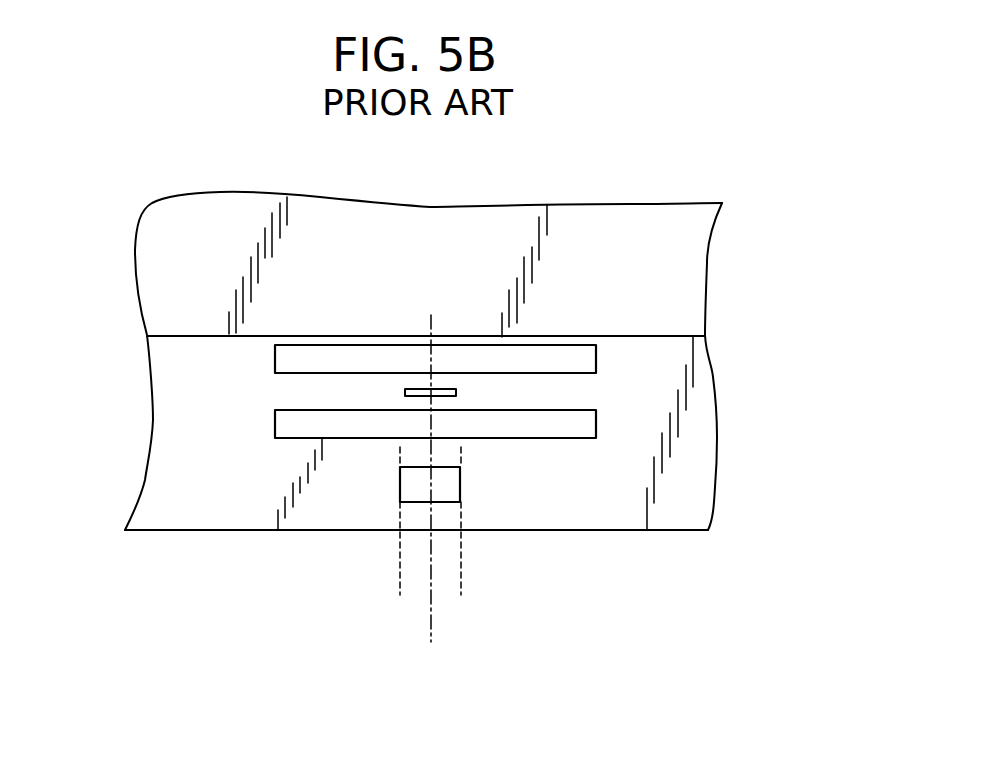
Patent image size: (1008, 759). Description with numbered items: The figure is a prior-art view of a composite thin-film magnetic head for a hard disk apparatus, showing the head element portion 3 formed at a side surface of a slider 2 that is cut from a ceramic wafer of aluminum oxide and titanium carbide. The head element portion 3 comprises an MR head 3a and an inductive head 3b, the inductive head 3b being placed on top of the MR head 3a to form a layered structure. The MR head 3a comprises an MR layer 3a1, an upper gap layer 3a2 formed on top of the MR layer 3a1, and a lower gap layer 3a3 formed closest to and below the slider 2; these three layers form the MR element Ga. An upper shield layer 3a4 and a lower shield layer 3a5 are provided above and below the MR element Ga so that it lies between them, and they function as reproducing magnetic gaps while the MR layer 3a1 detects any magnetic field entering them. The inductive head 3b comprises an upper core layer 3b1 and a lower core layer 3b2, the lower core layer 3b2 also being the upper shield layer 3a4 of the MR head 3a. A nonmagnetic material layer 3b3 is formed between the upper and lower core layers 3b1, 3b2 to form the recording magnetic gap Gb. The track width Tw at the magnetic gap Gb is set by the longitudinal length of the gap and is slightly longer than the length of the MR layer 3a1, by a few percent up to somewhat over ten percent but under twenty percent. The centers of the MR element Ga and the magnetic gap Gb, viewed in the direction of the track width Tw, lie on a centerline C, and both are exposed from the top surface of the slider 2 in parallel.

The slider 2 is at (683, 257).
The head element portion 3 is at (607, 515).
The MR head 3a is at (258, 347).
The inductive head 3b is at (243, 410).
The MR layer 3a1 is at (456, 403).
The upper gap layer 3a2 is at (460, 405).
The lower gap layer 3a3 is at (458, 383).
The upper shield layer 3a4 is at (565, 433).
The lower shield layer 3a5 is at (565, 357).
The upper core layer 3b1 is at (442, 450).
The lower core layer 3b2 is at (563, 462).
The nonmagnetic material layer 3b3 is at (445, 480).
The MR element Ga is at (818, 347).
The recording magnetic gap Gb is at (405, 449).
The track width Tw is at (460, 585).
The centerline C is at (429, 494).